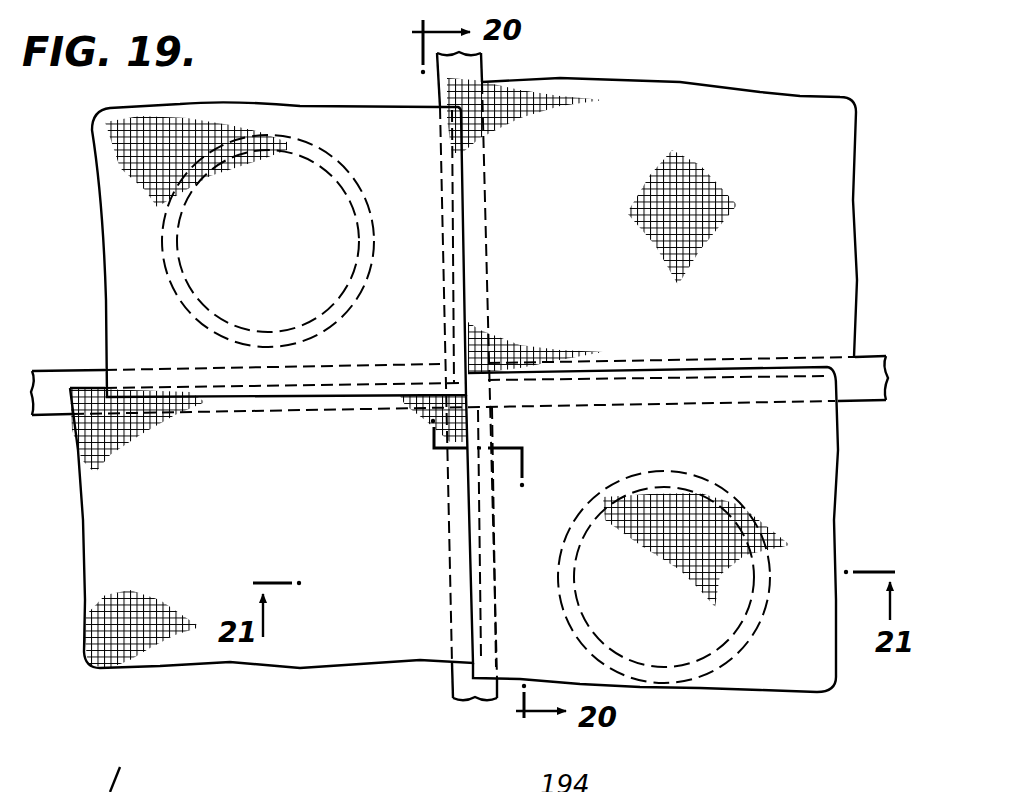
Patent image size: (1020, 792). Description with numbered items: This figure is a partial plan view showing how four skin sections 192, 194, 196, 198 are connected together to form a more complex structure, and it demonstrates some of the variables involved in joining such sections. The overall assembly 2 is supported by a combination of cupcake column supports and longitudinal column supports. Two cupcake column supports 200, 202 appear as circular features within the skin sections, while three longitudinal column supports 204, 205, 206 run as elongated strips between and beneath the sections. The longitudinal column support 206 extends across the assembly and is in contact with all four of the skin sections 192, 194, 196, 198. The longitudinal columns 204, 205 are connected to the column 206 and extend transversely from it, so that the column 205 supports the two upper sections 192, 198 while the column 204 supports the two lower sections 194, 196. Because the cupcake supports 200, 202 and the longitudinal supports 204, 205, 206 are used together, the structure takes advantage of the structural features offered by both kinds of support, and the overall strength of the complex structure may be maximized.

The panel assembly 2 is at (693, 56).
The skin section 192 is at (806, 94).
The skin section 194 is at (676, 542).
The skin section 196 is at (170, 670).
The skin section 198 is at (245, 216).
The cupcake column support 200 is at (668, 688).
The cupcake column support 202 is at (168, 272).
The longitudinal column support 204 is at (452, 686).
The longitudinal column support 205 is at (482, 63).
The longitudinal column support 206 is at (862, 402).